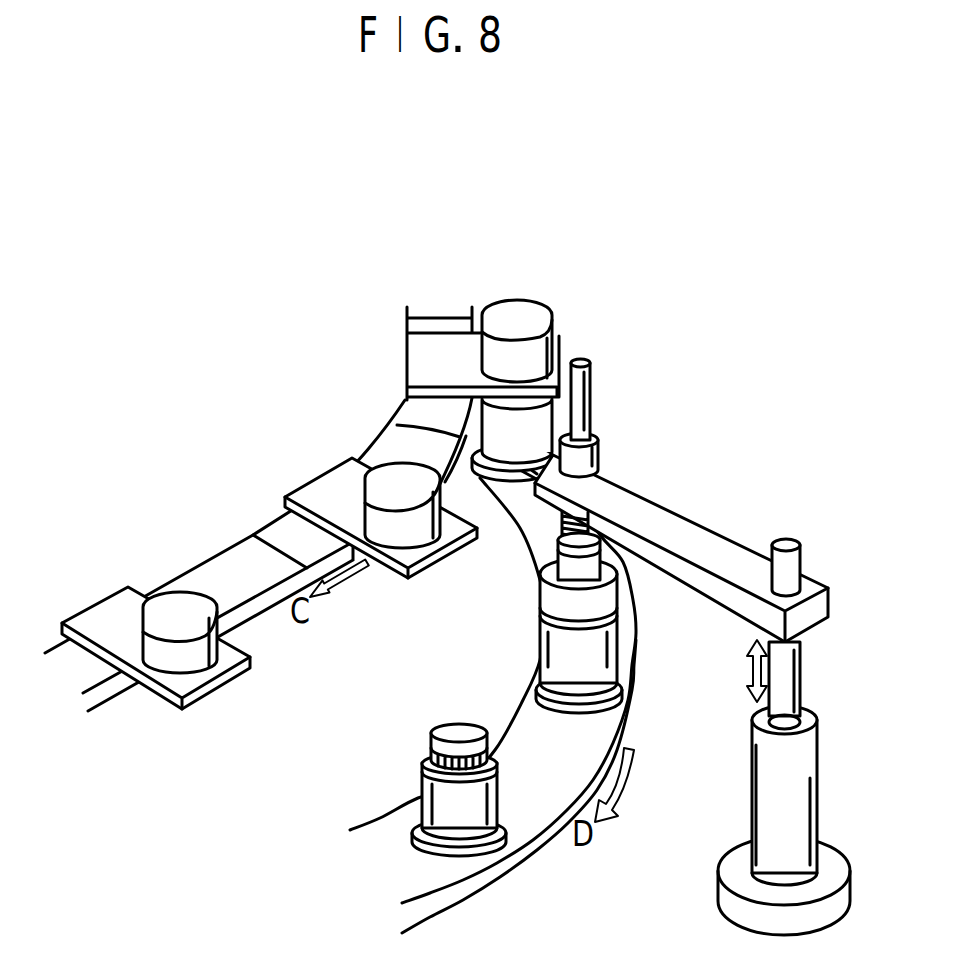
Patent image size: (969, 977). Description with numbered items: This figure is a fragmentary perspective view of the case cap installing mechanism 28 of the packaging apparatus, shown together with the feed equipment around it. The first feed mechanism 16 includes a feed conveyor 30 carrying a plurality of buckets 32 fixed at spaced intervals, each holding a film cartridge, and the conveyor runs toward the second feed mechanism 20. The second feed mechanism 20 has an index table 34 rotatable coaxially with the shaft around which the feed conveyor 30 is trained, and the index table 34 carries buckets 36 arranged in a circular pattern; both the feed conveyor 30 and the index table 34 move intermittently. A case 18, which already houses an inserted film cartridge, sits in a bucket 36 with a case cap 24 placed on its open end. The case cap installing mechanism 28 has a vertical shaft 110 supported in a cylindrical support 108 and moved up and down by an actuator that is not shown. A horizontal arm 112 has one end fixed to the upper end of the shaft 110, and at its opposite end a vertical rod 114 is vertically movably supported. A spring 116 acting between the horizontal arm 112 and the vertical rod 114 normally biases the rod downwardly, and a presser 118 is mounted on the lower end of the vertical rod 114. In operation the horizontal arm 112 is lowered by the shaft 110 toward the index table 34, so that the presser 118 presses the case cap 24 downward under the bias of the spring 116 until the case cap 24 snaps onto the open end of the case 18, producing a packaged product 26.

The first feed mechanism 16 is at (261, 554).
The case 18 is at (437, 759).
The second feed mechanism 20 is at (537, 850).
The case cap 24 is at (473, 737).
The packaged product 26 is at (448, 720).
The case cap installing mechanism 28 is at (602, 197).
The feed conveyor 30 is at (250, 582).
The bucket 32 is at (517, 317).
The index table 34 is at (412, 877).
The bucket 36 is at (423, 787).
The cylindrical support 108 is at (800, 770).
The vertical shaft 110 is at (792, 667).
The horizontal arm 112 is at (712, 535).
The vertical rod 114 is at (590, 407).
The spring 116 is at (557, 537).
The presser 118 is at (602, 595).